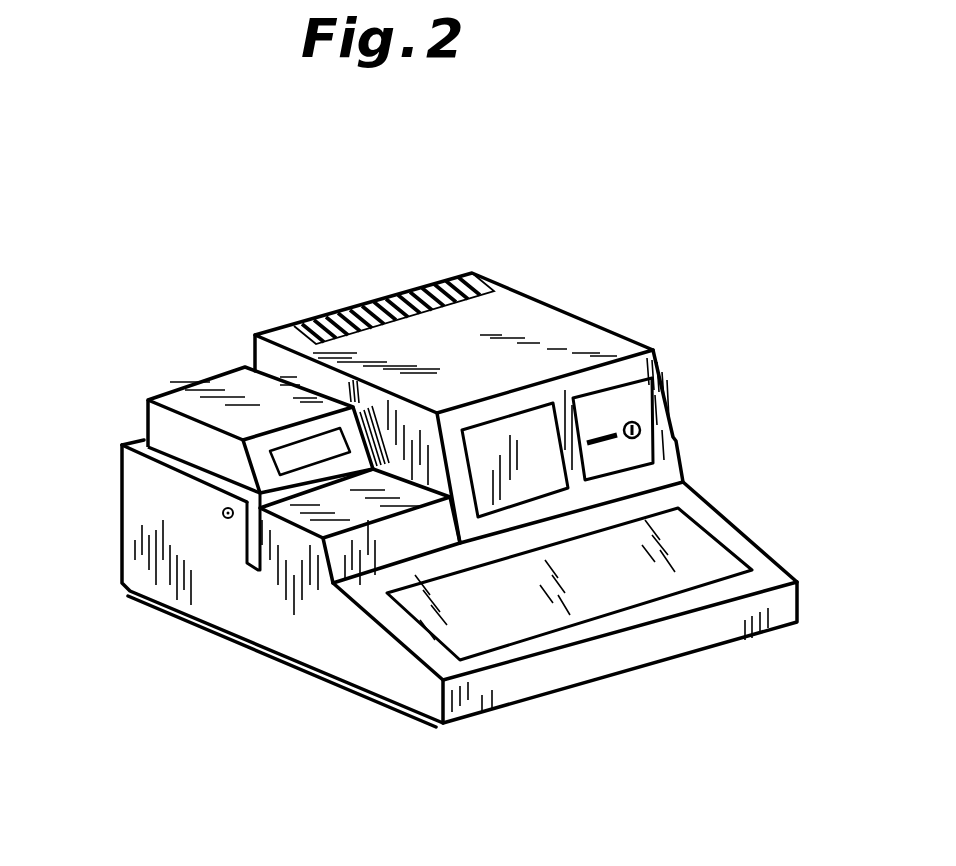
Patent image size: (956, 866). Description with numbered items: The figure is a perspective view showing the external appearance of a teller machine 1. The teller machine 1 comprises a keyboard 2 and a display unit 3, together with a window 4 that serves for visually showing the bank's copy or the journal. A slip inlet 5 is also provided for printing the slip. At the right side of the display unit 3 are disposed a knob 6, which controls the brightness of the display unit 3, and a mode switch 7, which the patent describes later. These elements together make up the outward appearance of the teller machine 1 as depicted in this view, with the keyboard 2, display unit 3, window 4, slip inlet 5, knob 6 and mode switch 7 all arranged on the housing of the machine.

The teller machine 1 is at (459, 500).
The keyboard 2 is at (695, 545).
The display unit 3 is at (503, 417).
The window 4 is at (280, 460).
The slip inlet 5 is at (250, 540).
The knob 6 is at (607, 423).
The mode switch 7 is at (645, 430).